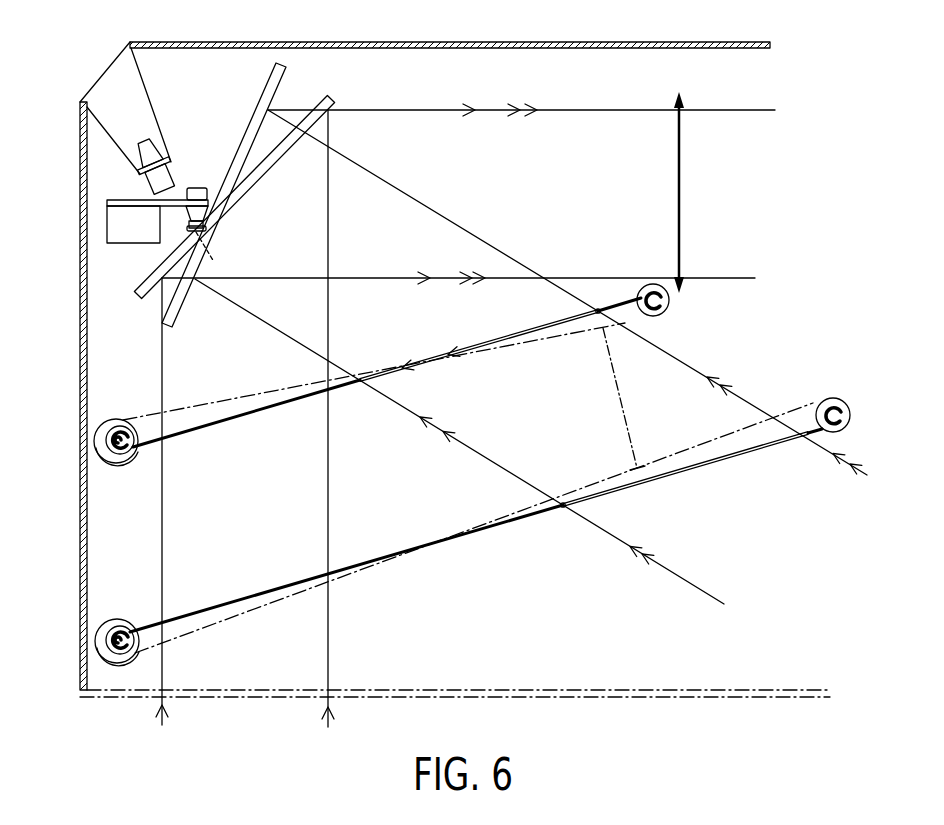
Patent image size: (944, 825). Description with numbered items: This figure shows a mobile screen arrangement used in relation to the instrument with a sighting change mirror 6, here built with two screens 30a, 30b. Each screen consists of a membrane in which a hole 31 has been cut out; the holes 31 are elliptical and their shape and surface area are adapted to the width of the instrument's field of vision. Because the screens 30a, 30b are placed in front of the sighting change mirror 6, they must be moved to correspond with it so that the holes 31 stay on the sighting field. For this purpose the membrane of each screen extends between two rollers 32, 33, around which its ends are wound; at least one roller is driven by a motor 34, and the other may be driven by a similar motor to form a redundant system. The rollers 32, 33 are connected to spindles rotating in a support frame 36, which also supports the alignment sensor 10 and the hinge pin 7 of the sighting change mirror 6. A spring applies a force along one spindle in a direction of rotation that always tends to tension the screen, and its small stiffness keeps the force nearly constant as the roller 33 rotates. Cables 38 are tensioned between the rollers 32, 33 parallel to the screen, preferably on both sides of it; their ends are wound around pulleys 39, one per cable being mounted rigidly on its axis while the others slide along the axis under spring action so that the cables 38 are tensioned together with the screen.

The sighting change mirror 6 is at (258, 173).
The hinge pin 7 is at (186, 236).
The alignment sensor 10 is at (198, 150).
The screen 30a is at (241, 418).
The screen 30b is at (270, 590).
The hole 31 is at (598, 311).
The roller 32 is at (118, 432).
The roller 33 is at (670, 302).
The motor 34 is at (127, 462).
The support frame 36 is at (80, 590).
The cable 38 is at (601, 348).
The pulley 39 is at (110, 615).